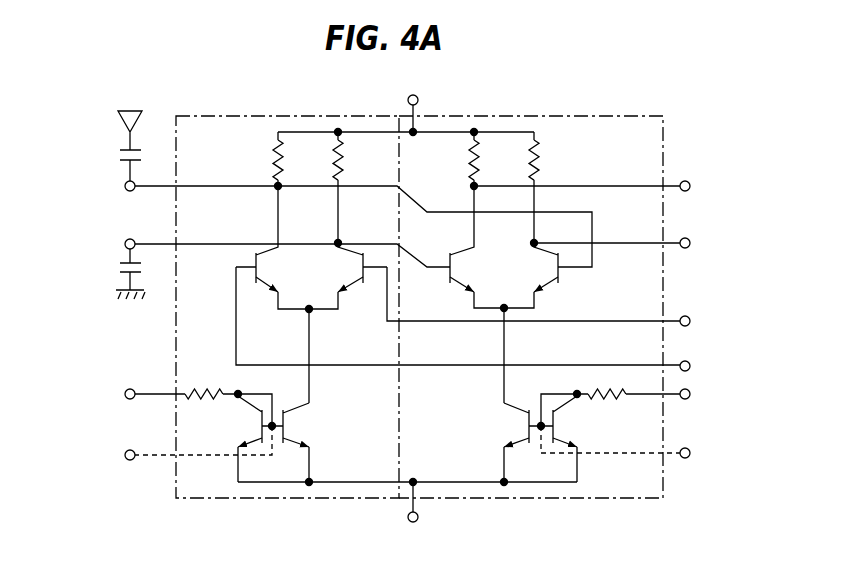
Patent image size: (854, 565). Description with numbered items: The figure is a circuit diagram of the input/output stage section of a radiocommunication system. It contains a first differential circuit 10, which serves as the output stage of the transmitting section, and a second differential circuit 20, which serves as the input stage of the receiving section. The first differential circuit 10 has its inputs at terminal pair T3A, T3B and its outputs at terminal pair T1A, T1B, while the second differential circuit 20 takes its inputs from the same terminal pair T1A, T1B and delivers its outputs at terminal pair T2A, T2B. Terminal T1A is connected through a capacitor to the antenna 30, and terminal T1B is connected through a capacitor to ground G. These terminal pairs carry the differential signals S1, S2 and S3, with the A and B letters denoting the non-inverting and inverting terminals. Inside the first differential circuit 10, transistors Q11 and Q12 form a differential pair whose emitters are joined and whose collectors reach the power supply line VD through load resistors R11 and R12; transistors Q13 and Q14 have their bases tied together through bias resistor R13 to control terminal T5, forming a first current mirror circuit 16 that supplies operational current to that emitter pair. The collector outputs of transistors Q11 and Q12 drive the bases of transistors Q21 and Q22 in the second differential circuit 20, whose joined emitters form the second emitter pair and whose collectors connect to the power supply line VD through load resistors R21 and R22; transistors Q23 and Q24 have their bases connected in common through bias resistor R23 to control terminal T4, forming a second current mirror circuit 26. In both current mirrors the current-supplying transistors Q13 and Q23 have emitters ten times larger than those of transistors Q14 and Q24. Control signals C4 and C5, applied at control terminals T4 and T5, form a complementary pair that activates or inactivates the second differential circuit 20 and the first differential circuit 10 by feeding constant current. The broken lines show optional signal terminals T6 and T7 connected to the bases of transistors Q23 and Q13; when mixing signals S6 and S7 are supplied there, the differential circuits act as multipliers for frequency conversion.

The first differential circuit 10 is at (215, 116).
The second differential circuit 20 is at (610, 116).
The antenna 30 is at (119, 120).
The first current mirror circuit 16 is at (232, 486).
The second current mirror circuit 26 is at (557, 489).
The load resistor R11 is at (256, 159).
The load resistor R12 is at (361, 187).
The bias resistor R13 is at (203, 392).
The load resistor R21 is at (452, 159).
The load resistor R22 is at (557, 187).
The bias resistor R23 is at (610, 410).
The differential transistor Q11 is at (268, 286).
The differential transistor Q12 is at (352, 286).
The current supplying transistor Q13 is at (305, 442).
The current mirror transistor Q14 is at (228, 439).
The differential transistor Q21 is at (458, 273).
The differential transistor Q22 is at (560, 273).
The current supplying transistor Q23 is at (507, 442).
The current mirror transistor Q24 is at (578, 431).
The non-inverting terminal T1A is at (124, 187).
The inverting terminal T1B is at (124, 245).
The non-inverting output terminal T2A is at (709, 189).
The inverting output terminal T2B is at (709, 246).
The non-inverting input terminal T3A is at (709, 323).
The inverting input terminal T3B is at (709, 368).
The control terminal T4 is at (690, 398).
The control terminal T5 is at (125, 396).
The signal terminal T6 is at (690, 457).
The signal terminal T7 is at (125, 456).
The differential signal S1 is at (130, 254).
The differential signal S2 is at (684, 217).
The differential signal S3 is at (684, 345).
The mixing signal S6 is at (685, 474).
The mixing signal S7 is at (132, 435).
The control signal C4 is at (685, 420).
The control signal C5 is at (132, 375).
The power supply line VD is at (414, 100).
The ground G is at (413, 519).